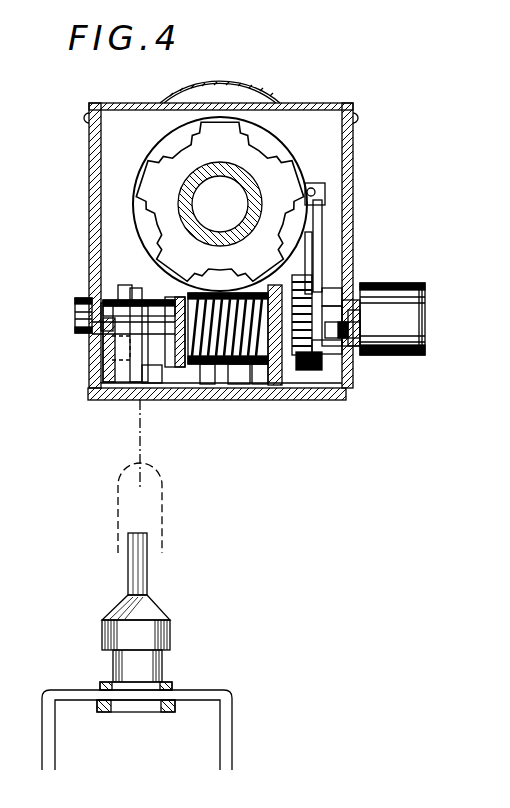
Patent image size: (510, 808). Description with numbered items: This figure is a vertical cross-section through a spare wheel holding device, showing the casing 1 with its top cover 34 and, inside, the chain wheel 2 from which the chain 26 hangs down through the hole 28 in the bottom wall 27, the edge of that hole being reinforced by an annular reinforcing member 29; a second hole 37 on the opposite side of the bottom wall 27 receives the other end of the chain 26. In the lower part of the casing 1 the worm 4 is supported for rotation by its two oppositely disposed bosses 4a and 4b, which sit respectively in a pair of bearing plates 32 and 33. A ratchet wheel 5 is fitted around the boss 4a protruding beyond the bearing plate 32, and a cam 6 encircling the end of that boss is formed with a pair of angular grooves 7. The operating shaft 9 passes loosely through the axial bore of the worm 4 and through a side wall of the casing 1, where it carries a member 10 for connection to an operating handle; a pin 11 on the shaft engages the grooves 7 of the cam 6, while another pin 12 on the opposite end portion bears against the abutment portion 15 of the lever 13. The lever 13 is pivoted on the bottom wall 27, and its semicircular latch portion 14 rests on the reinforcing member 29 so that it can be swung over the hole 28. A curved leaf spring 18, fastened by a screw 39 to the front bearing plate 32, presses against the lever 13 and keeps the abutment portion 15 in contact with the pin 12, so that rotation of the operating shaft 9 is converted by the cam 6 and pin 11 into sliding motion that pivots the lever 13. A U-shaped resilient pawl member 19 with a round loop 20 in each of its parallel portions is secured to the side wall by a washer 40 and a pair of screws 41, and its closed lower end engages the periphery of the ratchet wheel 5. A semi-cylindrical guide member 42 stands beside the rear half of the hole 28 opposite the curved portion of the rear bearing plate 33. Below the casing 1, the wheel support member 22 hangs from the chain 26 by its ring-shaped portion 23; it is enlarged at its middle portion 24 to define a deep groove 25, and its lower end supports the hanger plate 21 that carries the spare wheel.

The casing 1 is at (90, 140).
The chain wheel 2 is at (172, 118).
The worm 4 is at (222, 378).
The boss 4a is at (352, 255).
The boss 4b is at (112, 208).
The ratchet wheel 5 is at (330, 382).
The cam 6 is at (345, 365).
The angular grooves 7 is at (355, 300).
The operating shaft 9 is at (90, 303).
The member 10 is at (415, 312).
The pin 11 is at (338, 290).
The pin 12 is at (108, 282).
The lever 13 is at (160, 392).
The latch portion 14 is at (188, 392).
The abutment portion 15 is at (118, 268).
The leaf spring 18 is at (256, 405).
The pawl member 19 is at (322, 240).
The round loop 20 is at (318, 268).
The hanger plate 21 is at (232, 700).
The wheel support member 22 is at (172, 636).
The ring-shaped portion 23 is at (138, 575).
The middle portion 24 is at (152, 612).
The groove 25 is at (162, 664).
The chain 26 is at (118, 523).
The bottom wall 27 is at (208, 402).
The hole 28 is at (130, 400).
The annular reinforcing member 29 is at (100, 388).
The bearing plate 32 is at (298, 372).
The bearing plate 33 is at (236, 405).
The top cover 34 is at (277, 103).
The hole 37 is at (318, 395).
The screw 39 is at (262, 398).
The pivot pin 40 is at (322, 187).
The screws 41 is at (325, 203).
The semi-cylindrical guide member 42 is at (95, 355).